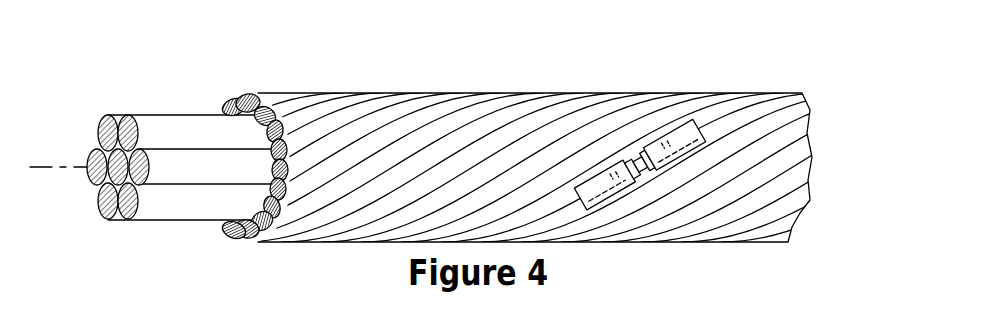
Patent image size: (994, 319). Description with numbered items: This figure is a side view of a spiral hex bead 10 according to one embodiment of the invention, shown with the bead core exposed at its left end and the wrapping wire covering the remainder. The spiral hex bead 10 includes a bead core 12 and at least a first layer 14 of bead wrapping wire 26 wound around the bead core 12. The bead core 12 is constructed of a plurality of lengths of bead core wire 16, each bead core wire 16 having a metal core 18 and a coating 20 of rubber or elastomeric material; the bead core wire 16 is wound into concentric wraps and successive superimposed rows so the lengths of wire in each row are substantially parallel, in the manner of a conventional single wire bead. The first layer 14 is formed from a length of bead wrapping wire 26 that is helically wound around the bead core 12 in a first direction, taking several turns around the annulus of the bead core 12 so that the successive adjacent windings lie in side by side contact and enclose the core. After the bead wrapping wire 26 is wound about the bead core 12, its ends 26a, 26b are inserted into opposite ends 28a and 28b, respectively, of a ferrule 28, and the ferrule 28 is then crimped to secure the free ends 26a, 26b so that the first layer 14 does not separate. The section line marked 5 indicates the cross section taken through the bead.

The spiral hex bead 10 is at (497, 161).
The bead core 12 is at (152, 176).
The first layer of bead wrapping wire 14 is at (497, 130).
The bead core wire 16 is at (155, 210).
The metal core 18 is at (98, 200).
The coating 20 is at (115, 221).
The bead wrapping wire 26 is at (292, 226).
The end of bead wrapping wire 26a is at (612, 198).
The end of bead wrapping wire 26b is at (668, 155).
The ferrule 28 is at (659, 178).
The end of ferrule 28a is at (586, 207).
The end of ferrule 28b is at (688, 126).
The section line 5- 5 is at (303, 77).